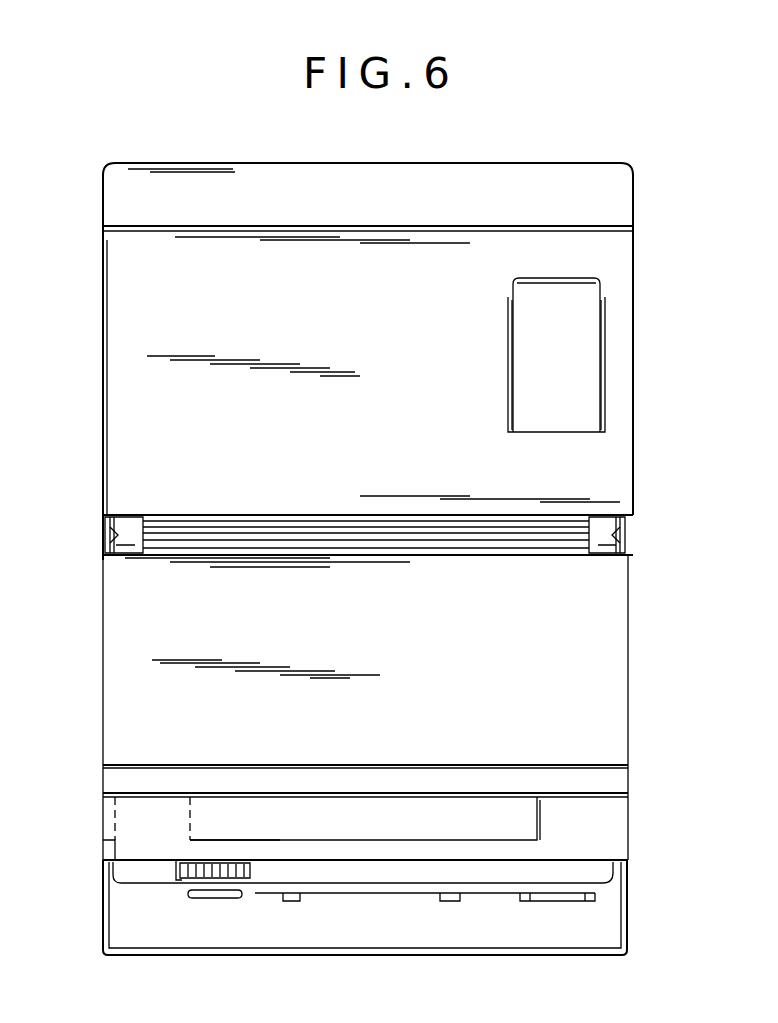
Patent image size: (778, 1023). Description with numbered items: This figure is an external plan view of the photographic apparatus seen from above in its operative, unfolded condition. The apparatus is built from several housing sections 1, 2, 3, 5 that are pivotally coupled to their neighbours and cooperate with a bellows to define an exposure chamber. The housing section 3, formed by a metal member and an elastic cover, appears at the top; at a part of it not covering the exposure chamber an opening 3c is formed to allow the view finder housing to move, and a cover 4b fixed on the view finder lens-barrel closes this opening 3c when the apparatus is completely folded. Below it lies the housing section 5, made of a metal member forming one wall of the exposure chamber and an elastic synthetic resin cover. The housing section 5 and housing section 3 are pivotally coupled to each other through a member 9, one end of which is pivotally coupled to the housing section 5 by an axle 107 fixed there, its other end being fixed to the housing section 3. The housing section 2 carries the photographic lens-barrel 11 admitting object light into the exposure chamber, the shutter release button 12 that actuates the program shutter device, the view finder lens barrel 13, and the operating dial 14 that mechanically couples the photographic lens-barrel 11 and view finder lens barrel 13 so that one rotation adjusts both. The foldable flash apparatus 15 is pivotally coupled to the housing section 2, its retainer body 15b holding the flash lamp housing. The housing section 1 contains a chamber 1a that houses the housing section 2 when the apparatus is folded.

The housing section 1 is at (620, 196).
The chamber 1a is at (598, 932).
The housing section 2 is at (612, 808).
The housing section 3 is at (384, 356).
The opening 3c is at (605, 380).
The cover 4b is at (585, 318).
The housing section 5 is at (382, 657).
The member 9 is at (118, 545).
The axle 107 is at (100, 530).
The photographic lens-barrel 11 is at (312, 902).
The shutter release button 12 is at (220, 898).
The view finder lens barrel 13 is at (575, 902).
The operating dial 14 is at (177, 870).
The foldable flash apparatus 15 is at (125, 850).
The retainer body 15b is at (268, 828).